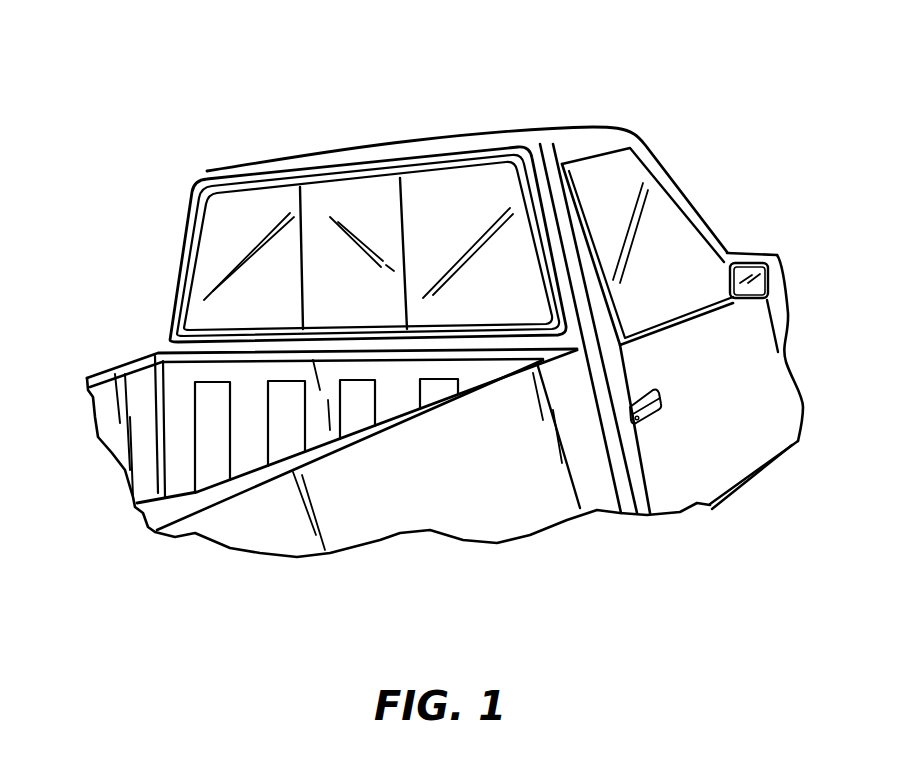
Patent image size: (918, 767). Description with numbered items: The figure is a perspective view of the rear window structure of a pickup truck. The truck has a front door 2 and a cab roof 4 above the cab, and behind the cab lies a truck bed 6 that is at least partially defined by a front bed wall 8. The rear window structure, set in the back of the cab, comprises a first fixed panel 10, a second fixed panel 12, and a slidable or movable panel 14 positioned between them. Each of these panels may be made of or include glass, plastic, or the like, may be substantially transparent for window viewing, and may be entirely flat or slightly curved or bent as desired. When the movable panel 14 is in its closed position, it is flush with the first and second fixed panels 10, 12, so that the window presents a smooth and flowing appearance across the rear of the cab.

The front door 2 is at (688, 437).
The cab roof 4 is at (500, 124).
The truck bed 6 is at (139, 386).
The front bed wall 8 is at (245, 422).
The first fixed panel 10 is at (270, 205).
The second fixed panel 12 is at (440, 197).
The slidable/movable panel 14 is at (350, 203).